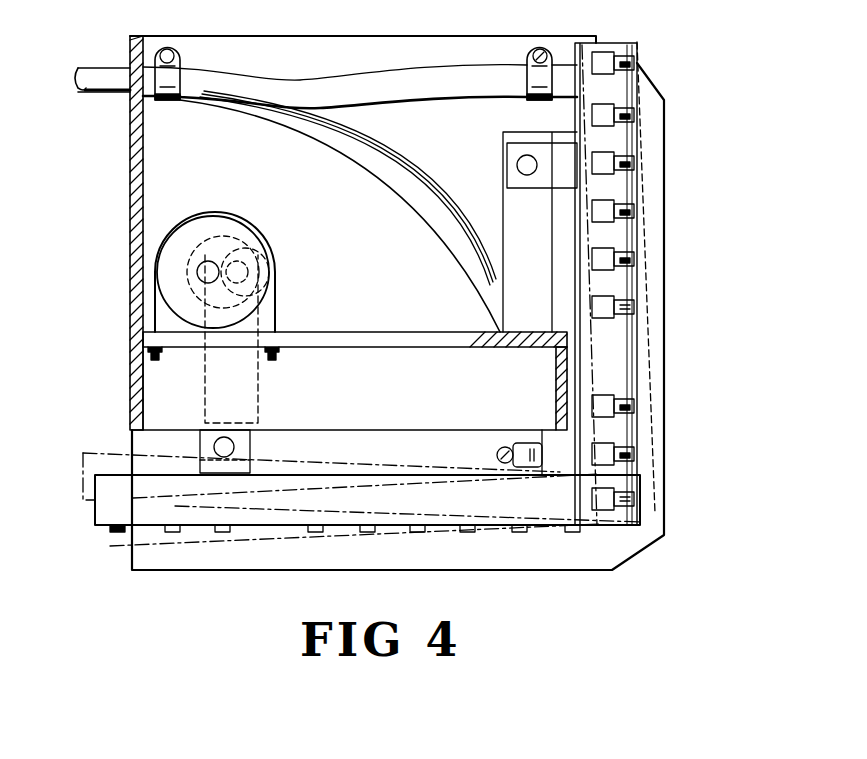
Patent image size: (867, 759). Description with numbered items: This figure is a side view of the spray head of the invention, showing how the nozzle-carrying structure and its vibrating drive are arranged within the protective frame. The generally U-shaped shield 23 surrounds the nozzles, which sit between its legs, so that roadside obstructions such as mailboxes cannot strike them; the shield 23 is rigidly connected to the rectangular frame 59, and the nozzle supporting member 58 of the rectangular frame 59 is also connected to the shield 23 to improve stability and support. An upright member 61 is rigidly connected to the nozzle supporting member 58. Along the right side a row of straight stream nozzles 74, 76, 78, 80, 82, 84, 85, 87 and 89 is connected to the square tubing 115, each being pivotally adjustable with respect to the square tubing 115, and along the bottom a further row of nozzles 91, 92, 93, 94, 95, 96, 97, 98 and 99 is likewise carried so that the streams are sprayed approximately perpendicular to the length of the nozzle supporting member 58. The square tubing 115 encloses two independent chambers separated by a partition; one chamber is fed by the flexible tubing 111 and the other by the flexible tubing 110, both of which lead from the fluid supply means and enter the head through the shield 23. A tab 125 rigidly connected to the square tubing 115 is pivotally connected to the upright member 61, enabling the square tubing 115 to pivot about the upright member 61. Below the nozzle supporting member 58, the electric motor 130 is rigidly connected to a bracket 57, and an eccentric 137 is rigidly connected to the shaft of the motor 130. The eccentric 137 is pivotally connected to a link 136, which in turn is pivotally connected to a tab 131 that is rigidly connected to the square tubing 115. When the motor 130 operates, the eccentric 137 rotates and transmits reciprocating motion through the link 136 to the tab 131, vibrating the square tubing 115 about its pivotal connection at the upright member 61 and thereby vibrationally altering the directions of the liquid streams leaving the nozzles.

The shield 23 is at (130, 218).
The bracket 57 is at (344, 332).
The nozzle supporting member 58 is at (538, 332).
The rectangular frame 59 is at (385, 401).
The upright member 61 is at (540, 266).
The nozzle 74 is at (637, 62).
The nozzle 76 is at (640, 114).
The nozzle 78 is at (640, 162).
The nozzle 80 is at (640, 210).
The nozzle 82 is at (640, 258).
The nozzle 84 is at (640, 306).
The nozzle 85 is at (640, 405).
The nozzle 87 is at (640, 453).
The nozzle 89 is at (640, 498).
The nozzle 91 is at (576, 533).
The nozzle 92 is at (525, 533).
The nozzle 93 is at (470, 533).
The nozzle 94 is at (418, 533).
The nozzle 95 is at (366, 533).
The nozzle 96 is at (314, 533).
The nozzle 97 is at (222, 533).
The nozzle 98 is at (173, 533).
The nozzle 99 is at (118, 533).
The flexible tubing 110 is at (356, 150).
The flexible tubing 111 is at (362, 84).
The square tubing 115 is at (571, 504).
The tab 125 is at (578, 176).
The electric motor 130 is at (189, 232).
The tab 131 is at (250, 446).
The link 136 is at (258, 388).
The eccentric 137 is at (236, 238).